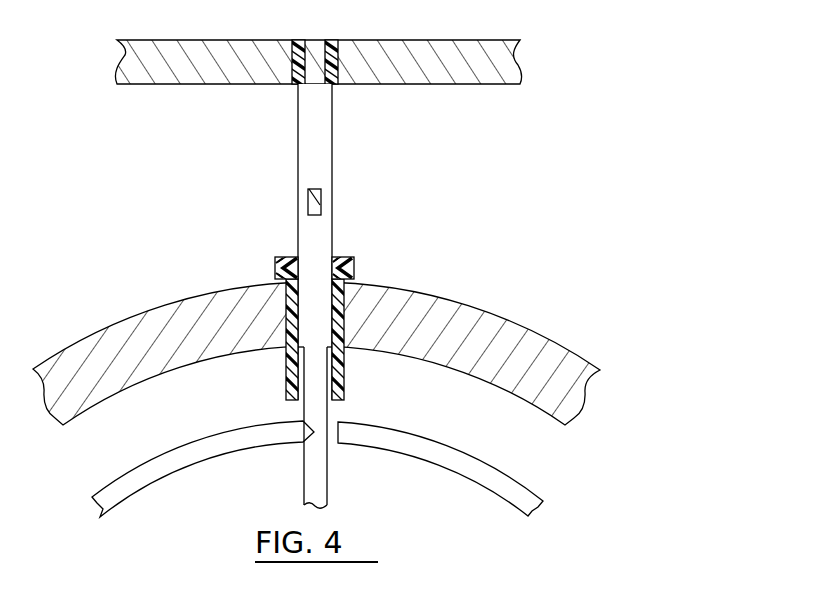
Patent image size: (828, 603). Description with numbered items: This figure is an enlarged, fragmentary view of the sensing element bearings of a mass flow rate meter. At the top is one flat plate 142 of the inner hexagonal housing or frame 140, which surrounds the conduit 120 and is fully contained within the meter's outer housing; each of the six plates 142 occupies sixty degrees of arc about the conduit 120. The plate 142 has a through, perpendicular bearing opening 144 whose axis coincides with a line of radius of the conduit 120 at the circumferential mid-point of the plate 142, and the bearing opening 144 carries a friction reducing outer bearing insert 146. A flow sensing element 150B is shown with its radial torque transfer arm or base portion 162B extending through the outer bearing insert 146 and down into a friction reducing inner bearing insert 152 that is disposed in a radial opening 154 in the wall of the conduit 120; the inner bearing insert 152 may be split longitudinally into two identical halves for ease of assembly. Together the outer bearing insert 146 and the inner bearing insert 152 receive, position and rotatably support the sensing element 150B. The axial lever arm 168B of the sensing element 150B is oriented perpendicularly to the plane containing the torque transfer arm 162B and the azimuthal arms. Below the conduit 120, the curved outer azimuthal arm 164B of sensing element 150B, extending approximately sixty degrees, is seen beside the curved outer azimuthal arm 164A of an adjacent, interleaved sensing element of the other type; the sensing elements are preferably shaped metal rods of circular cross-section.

The hexagonal frame 140 is at (401, 78).
The plate 142 is at (467, 67).
The bearing opening 144 is at (316, 82).
The outer bearing insert 146 is at (335, 62).
The sensing element 150B is at (334, 296).
The torque transfer arm 162B is at (315, 168).
The axial lever arm 168B is at (308, 205).
The inner bearing insert 152 is at (348, 257).
The radial opening 154 is at (293, 322).
The conduit 120 is at (527, 352).
The outer azimuthal arm 164A is at (475, 472).
The outer azimuthal arm 164B is at (156, 467).